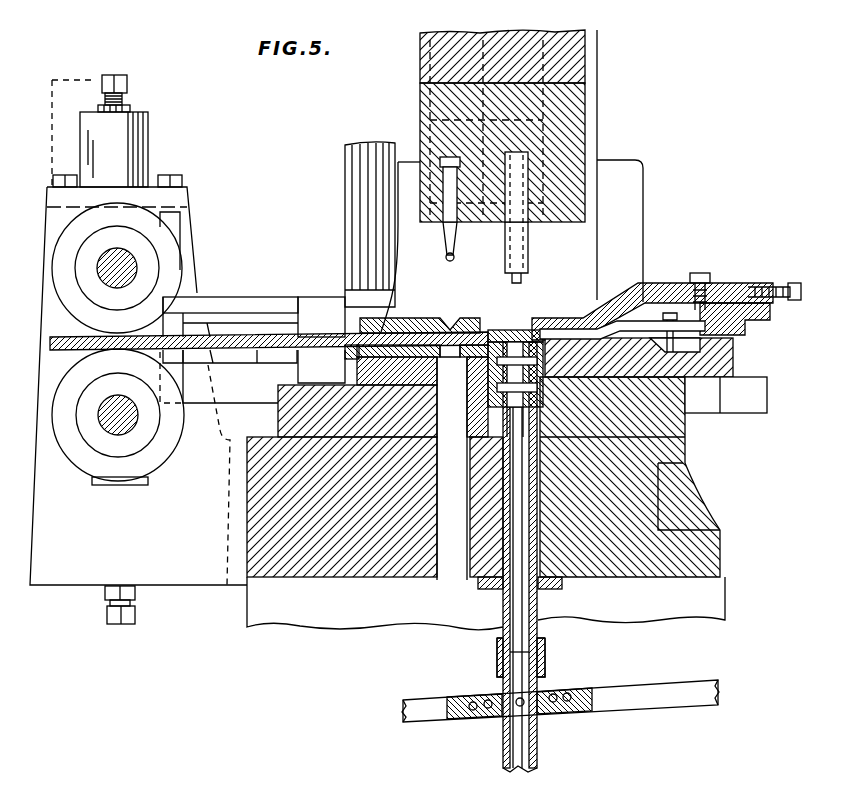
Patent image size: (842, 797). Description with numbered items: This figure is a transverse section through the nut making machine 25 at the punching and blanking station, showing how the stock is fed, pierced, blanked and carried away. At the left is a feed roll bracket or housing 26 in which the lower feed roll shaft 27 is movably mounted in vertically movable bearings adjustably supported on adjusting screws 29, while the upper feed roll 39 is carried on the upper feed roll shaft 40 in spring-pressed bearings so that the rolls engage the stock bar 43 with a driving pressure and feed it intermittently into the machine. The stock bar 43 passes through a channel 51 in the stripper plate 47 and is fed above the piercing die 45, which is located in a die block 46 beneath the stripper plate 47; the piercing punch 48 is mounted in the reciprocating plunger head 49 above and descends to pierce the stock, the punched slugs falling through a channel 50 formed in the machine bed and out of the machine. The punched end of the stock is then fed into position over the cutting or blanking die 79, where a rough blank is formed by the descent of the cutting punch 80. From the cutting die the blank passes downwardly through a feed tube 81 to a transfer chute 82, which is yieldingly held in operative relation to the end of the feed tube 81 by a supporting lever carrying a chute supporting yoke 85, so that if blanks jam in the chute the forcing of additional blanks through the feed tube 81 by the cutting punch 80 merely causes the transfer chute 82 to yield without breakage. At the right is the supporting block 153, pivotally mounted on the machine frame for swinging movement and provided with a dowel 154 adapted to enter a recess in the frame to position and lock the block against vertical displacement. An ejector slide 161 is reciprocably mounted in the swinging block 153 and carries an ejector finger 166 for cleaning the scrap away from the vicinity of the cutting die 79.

The machine 25 is at (247, 588).
The feed roll bracket 26 is at (62, 573).
The lower feed roll shaft 27 is at (132, 425).
The adjusting screw 29 is at (135, 605).
The upper feed roll 39 is at (172, 278).
The upper feed roll shaft 40 is at (128, 266).
The stock bar 43 is at (232, 333).
The piercing die 45 is at (478, 330).
The die block 46 is at (430, 383).
The stripper plate 47 is at (424, 330).
The piercing punch 48 is at (455, 251).
The reciprocating plunger head 49 is at (583, 83).
The channel 50 is at (433, 565).
The channel 51 is at (387, 333).
The cutting die 79 is at (512, 335).
The cutting punch 80 is at (528, 252).
The feed tube 81 is at (548, 580).
The transfer chute 82 is at (344, 203).
The chute supporting yoke 85 is at (553, 693).
The supporting block 153 is at (721, 395).
The dowel 154 is at (650, 296).
The ejector slide 161 is at (735, 350).
The ejector finger 166 is at (553, 335).